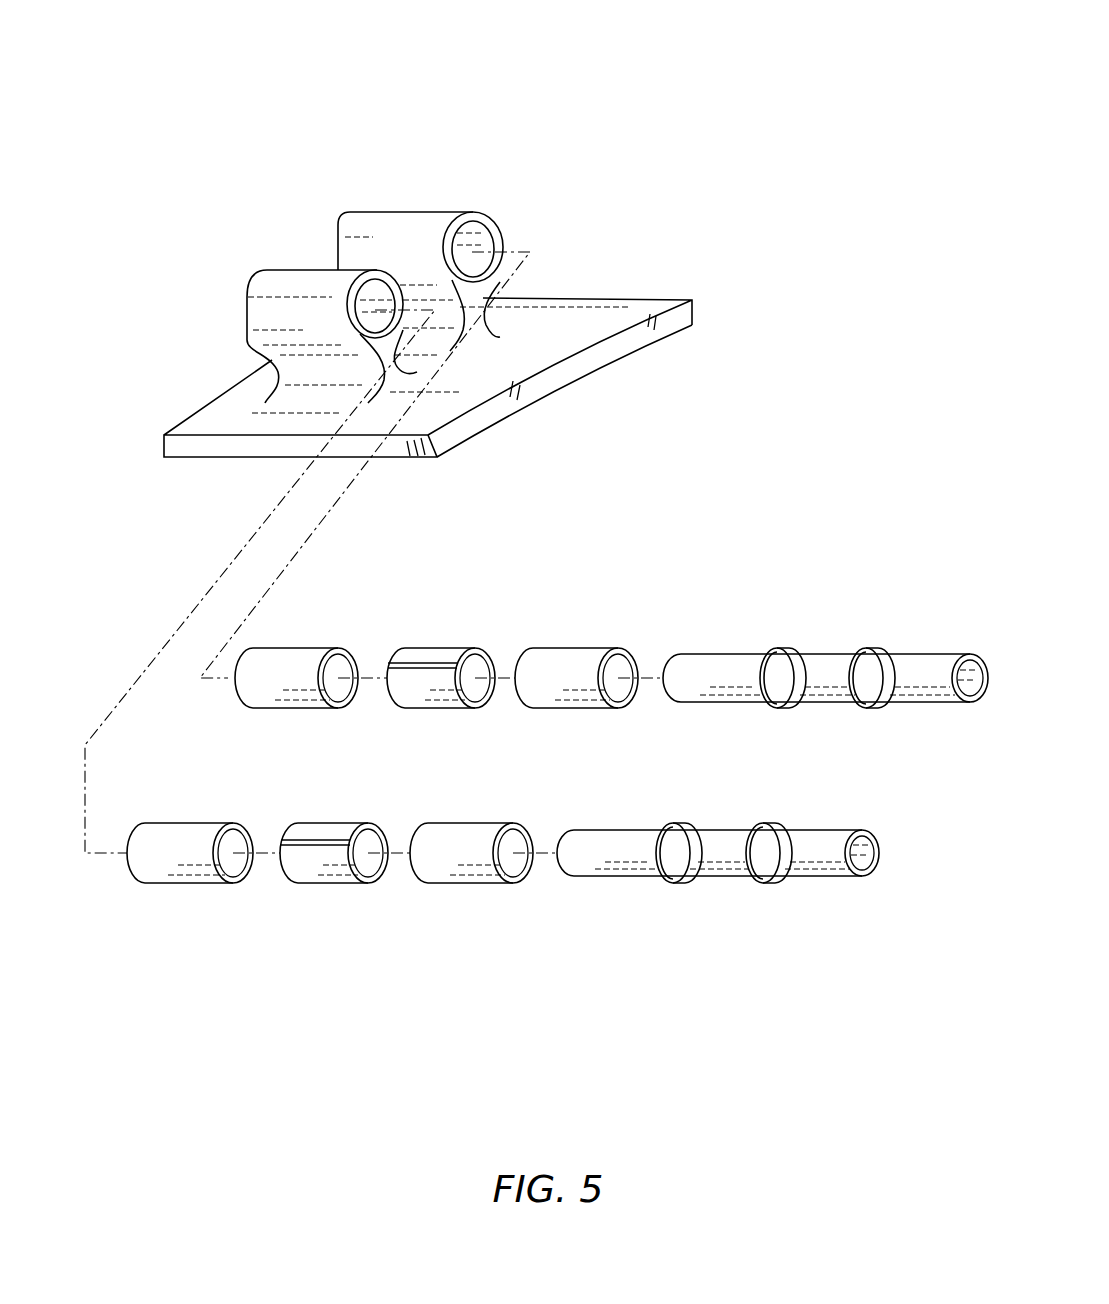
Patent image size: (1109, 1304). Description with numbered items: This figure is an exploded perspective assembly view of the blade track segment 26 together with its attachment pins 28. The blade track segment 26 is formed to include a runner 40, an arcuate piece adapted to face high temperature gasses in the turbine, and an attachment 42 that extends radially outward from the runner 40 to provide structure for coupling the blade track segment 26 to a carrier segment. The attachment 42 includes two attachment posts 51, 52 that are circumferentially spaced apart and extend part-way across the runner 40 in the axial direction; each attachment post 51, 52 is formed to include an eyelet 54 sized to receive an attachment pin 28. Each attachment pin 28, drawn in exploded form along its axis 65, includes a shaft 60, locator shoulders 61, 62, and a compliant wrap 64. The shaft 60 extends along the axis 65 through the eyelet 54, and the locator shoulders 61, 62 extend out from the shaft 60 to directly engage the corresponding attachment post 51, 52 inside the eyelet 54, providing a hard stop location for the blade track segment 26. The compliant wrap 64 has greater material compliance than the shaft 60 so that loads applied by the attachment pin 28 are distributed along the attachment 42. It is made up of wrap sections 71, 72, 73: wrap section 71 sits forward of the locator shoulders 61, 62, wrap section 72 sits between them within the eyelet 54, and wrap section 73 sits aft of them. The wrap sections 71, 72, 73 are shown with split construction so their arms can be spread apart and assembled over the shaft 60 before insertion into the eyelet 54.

The blade track segment 26 is at (602, 272).
The runner 40 is at (532, 397).
The attachment 42 is at (213, 176).
The attachment post 51 is at (283, 265).
The attachment post 52 is at (355, 213).
The eyelet 54 is at (380, 297).
The attachment pin 28 is at (712, 522).
The shaft 60 is at (720, 668).
The locator shoulder 61 is at (787, 640).
The locator shoulder 62 is at (875, 640).
The compliant wrap 64 is at (390, 533).
The wrap section 71 is at (308, 640).
The wrap section 72 is at (442, 640).
The wrap section 73 is at (583, 643).
The axis 65 is at (213, 684).